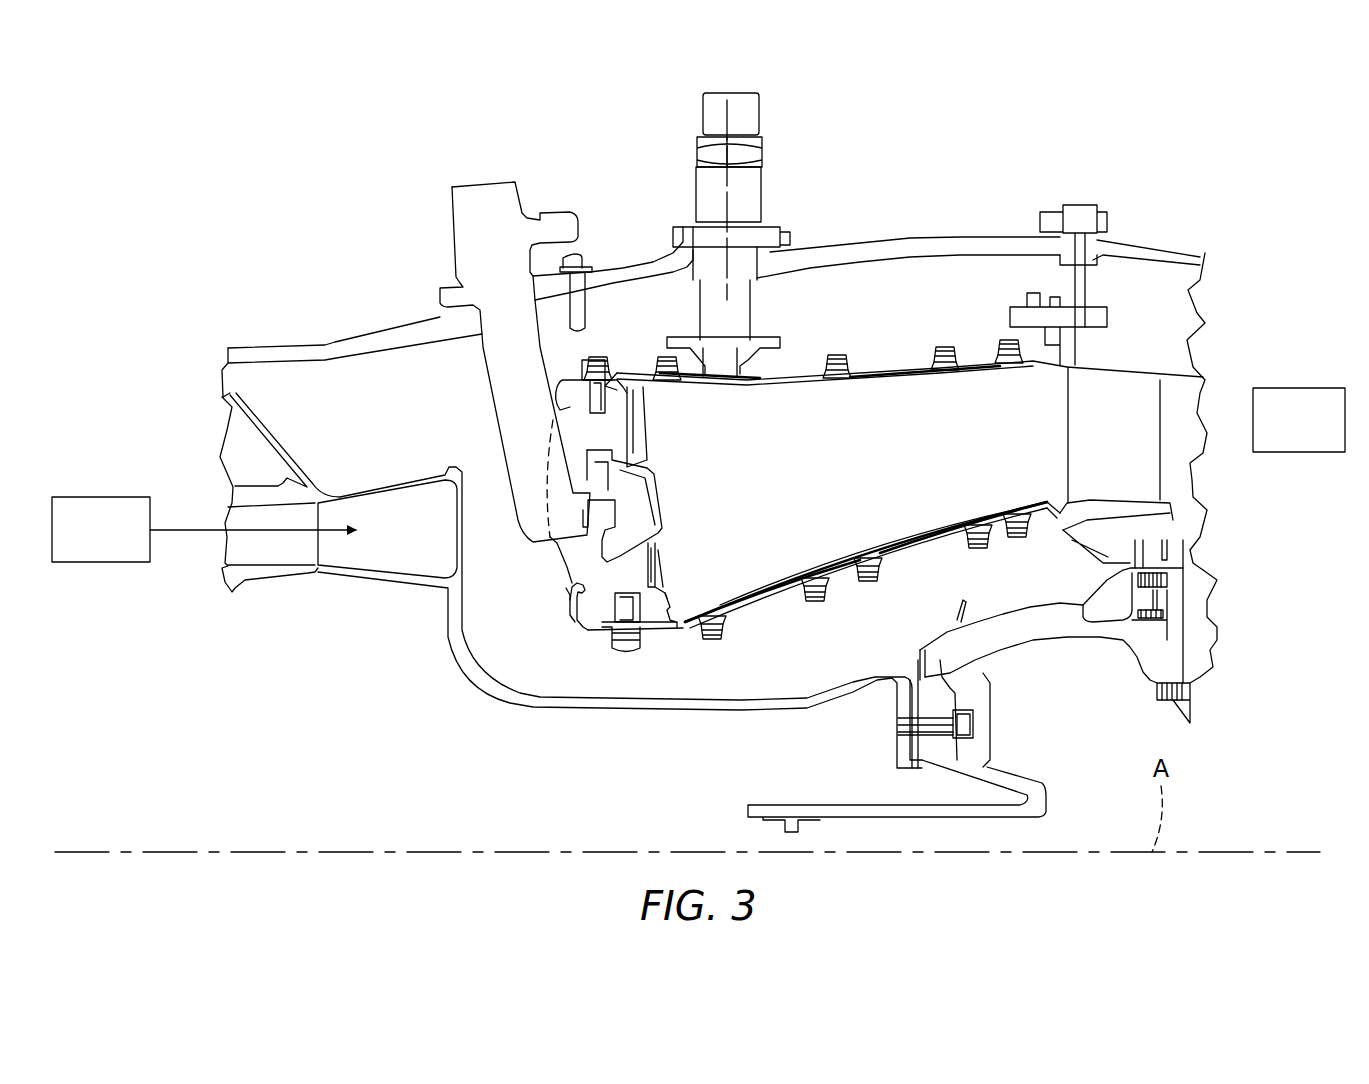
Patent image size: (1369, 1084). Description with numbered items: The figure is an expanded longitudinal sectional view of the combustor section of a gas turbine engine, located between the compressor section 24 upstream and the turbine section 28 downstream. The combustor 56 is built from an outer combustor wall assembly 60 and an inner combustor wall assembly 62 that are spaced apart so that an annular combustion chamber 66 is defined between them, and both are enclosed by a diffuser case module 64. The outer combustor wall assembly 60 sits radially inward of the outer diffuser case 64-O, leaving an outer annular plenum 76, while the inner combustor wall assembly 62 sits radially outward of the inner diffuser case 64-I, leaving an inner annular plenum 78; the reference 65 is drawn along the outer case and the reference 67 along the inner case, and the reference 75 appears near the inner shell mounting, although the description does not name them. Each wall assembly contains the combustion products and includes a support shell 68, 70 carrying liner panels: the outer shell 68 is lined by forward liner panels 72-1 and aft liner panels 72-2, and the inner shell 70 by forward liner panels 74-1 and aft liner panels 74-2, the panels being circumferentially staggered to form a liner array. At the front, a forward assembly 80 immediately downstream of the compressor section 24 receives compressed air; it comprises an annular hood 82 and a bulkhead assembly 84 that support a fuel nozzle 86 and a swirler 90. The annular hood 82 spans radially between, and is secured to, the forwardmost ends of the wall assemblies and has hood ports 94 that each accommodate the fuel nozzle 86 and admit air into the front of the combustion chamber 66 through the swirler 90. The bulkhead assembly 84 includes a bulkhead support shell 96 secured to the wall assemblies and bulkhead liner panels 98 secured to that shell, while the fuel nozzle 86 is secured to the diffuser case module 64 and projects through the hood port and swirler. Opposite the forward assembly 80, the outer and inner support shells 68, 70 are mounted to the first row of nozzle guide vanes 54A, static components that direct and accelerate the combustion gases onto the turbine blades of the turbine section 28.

The compressor section 24 is at (85, 542).
The turbine section 28 is at (1282, 433).
The nozzle guide vanes 54A is at (1091, 448).
The combustor 56 is at (995, 146).
The outer combustor wall assembly 60 is at (899, 355).
The inner combustor wall assembly 62 is at (845, 585).
The diffuser case module 64 is at (890, 240).
The outer diffuser case 64-O is at (818, 252).
The inner diffuser case 64-I is at (633, 712).
The outer diffuser case 65 is at (962, 245).
The annular combustion chamber 66 is at (827, 480).
The inner diffuser case 67 is at (743, 712).
The outer support shell 68 is at (862, 373).
The inner support shell 70 is at (963, 548).
The forward liner panels 72-1 is at (765, 390).
The aft liner panels 72-2 is at (930, 374).
The forward liner panels 74-1 is at (767, 582).
The aft liner panels 74-2 is at (953, 520).
The liner mount 75 is at (1022, 543).
The outer annular plenum 76 is at (803, 308).
The inner annular plenum 78 is at (781, 678).
The forward assembly 80 is at (571, 641).
The annular hood 82 is at (567, 602).
The bulkhead assembly 84 is at (652, 440).
The fuel nozzle 86 is at (488, 311).
The swirler 90 is at (660, 553).
The hood ports 94 is at (570, 581).
The bulkhead support shell 96 is at (650, 583).
The bulkhead liner panels 98 is at (667, 560).